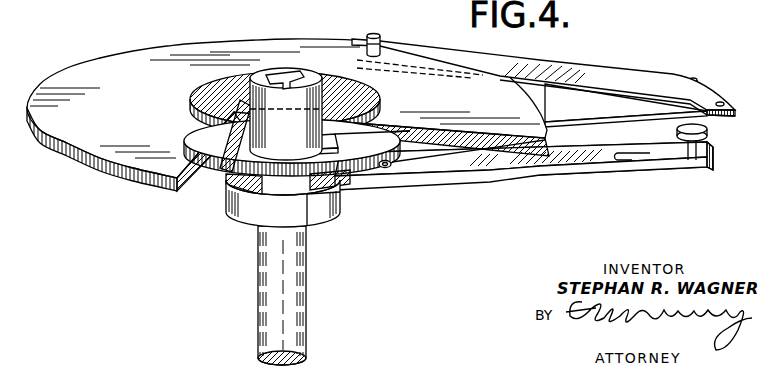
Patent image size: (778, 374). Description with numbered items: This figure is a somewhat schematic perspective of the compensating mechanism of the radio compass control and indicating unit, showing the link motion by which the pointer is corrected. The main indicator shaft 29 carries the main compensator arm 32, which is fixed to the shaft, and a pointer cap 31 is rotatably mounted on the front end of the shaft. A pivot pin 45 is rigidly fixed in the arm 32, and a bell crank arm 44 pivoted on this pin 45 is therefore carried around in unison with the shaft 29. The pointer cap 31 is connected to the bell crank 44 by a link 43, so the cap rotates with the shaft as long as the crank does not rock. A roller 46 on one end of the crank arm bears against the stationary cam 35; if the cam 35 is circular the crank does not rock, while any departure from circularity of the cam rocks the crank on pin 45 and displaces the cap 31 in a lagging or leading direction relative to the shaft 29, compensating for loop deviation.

The main indicator shaft 29 is at (300, 299).
The pointer cap 31 is at (227, 157).
The main compensator arm 32 is at (521, 170).
The cam 35 is at (115, 152).
The link 43 is at (577, 122).
The bell crank arm 44 is at (622, 73).
The pivot pin 45 is at (688, 102).
The roller 46 is at (381, 37).